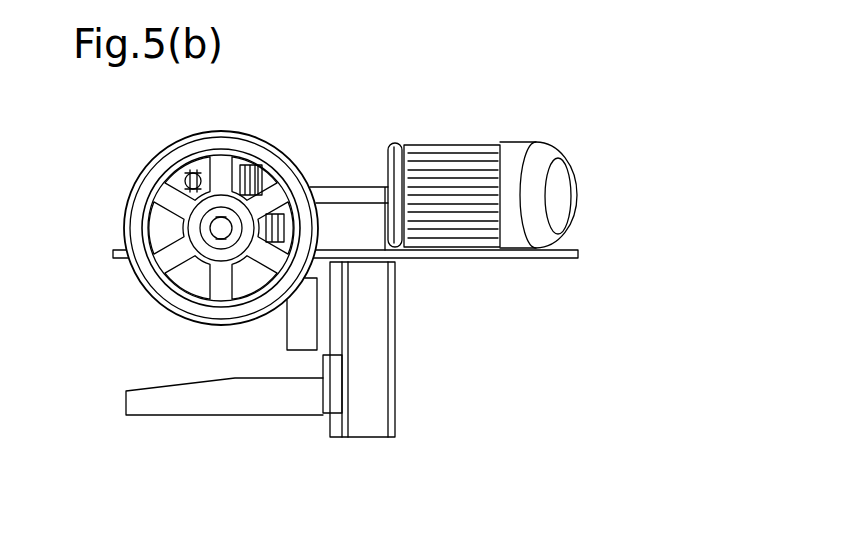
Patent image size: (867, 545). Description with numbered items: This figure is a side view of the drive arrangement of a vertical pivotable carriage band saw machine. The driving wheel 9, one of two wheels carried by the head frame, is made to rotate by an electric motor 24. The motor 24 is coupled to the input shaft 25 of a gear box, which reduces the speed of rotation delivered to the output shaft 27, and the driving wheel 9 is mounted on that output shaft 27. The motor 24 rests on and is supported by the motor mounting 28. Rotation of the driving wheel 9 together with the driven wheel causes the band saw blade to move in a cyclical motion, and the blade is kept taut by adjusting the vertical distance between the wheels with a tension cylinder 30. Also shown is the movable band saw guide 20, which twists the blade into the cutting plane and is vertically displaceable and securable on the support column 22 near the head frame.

The driving wheel 9 is at (228, 140).
The band saw guide 20 is at (130, 400).
The support column 22 is at (372, 390).
The electric motor 24 is at (515, 148).
The input shaft 25 is at (340, 197).
The output shaft 27 is at (216, 229).
The motor mounting 28 is at (457, 255).
The tension cylinder 30 is at (298, 322).